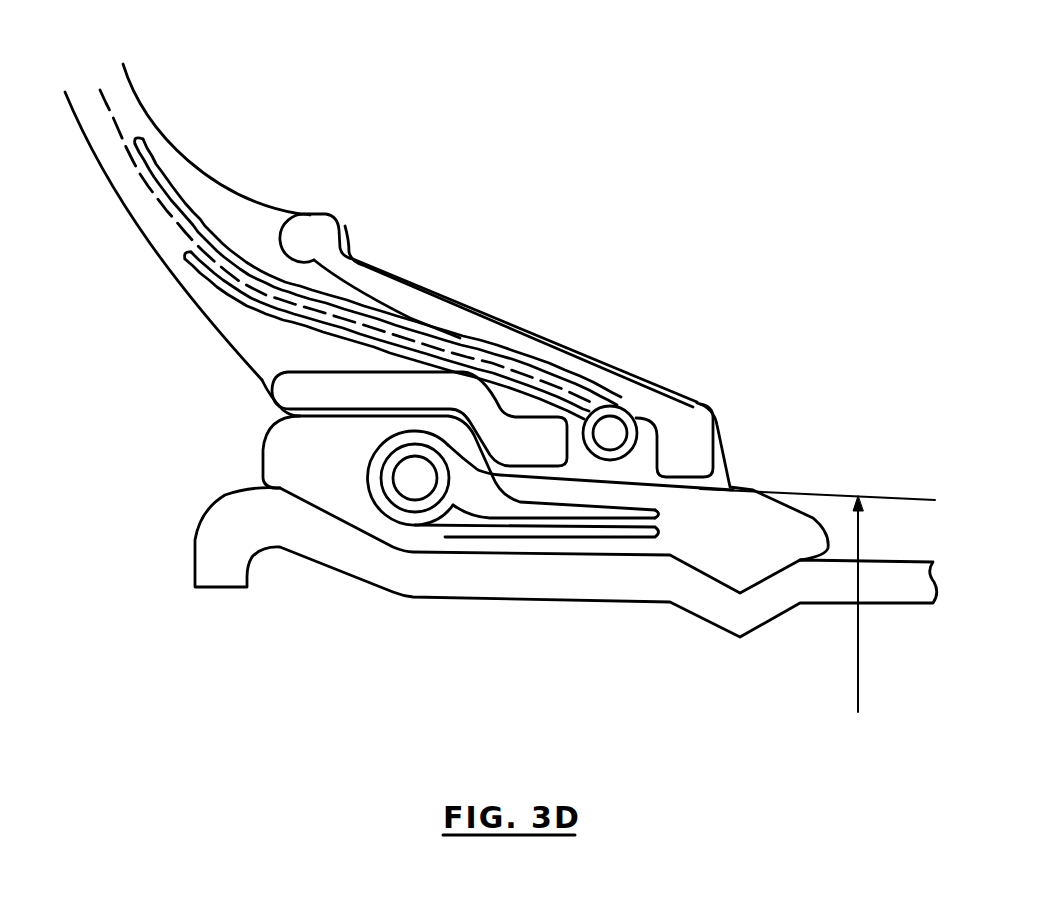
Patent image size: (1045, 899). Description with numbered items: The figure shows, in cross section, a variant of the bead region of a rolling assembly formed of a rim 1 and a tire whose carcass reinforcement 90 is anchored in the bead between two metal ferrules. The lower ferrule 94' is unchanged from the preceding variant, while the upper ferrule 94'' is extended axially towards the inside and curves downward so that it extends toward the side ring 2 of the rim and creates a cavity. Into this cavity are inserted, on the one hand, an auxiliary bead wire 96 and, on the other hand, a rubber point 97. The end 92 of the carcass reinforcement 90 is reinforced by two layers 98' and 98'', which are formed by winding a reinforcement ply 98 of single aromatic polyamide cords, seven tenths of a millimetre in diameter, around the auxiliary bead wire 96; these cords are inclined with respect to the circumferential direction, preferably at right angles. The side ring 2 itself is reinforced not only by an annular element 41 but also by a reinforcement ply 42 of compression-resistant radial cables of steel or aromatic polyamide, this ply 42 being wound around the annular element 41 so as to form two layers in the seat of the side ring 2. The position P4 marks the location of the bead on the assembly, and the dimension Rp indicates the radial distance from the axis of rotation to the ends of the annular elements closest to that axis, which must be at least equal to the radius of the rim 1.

The rim 1 is at (613, 582).
The side ring 2 is at (315, 465).
The annular element 41 is at (398, 508).
The reinforcement ply 42 is at (480, 530).
The carcass reinforcement 90 is at (163, 178).
The end of the carcass reinforcement 92 is at (457, 350).
The lower ferrule 94' is at (354, 419).
The upper ferrule 94'' is at (488, 283).
The auxiliary bead wire 96 is at (607, 433).
The rubber point 97 is at (627, 468).
The reinforcement ply 98 is at (687, 414).
The first layer of reinforcement ply 98' is at (334, 335).
The second layer of reinforcement ply 98'' is at (378, 271).
The position P4 is at (125, 108).
The distance R_p Rp is at (817, 608).